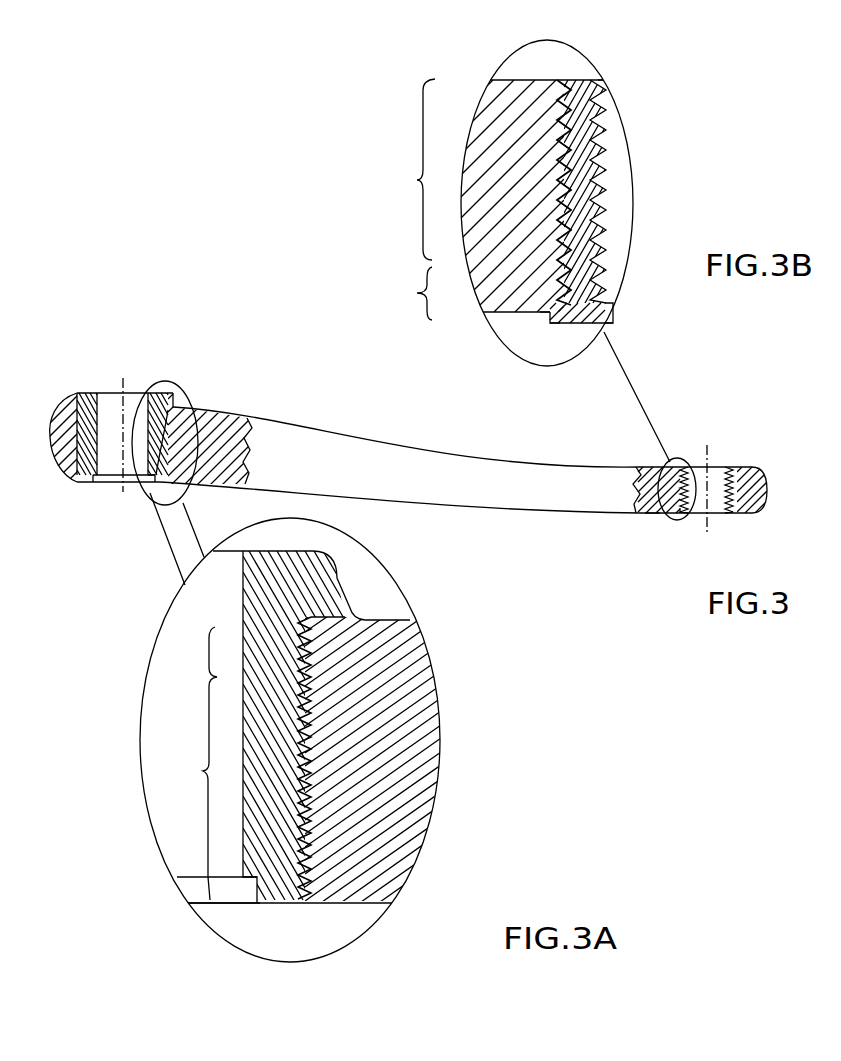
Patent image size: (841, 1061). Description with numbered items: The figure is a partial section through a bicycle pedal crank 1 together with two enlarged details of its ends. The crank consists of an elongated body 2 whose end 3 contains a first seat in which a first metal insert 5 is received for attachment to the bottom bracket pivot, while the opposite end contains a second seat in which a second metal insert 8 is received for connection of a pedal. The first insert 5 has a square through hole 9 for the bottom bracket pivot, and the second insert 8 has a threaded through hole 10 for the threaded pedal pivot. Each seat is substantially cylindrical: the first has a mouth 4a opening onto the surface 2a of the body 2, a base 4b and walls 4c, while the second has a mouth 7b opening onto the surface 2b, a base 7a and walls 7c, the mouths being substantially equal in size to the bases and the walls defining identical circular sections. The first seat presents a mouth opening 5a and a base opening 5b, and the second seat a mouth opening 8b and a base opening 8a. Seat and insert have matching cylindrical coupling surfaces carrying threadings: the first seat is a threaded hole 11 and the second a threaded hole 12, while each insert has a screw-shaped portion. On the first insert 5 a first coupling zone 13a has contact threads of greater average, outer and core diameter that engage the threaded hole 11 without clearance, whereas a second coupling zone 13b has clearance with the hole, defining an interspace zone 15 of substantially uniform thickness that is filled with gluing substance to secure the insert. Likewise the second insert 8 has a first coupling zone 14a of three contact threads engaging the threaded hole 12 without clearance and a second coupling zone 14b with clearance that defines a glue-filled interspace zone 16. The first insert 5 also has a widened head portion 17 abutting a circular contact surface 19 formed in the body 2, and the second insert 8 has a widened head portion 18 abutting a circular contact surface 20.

In FIG. 3, the pedal crank 1 is at (282, 397).
In FIG. 3, the elongated body 2 is at (457, 472).
In FIG. 3, the surface of the body 2a is at (367, 438).
In FIG. 3, the surface of the body 2b is at (470, 508).
In FIG. 3, the end 3 is at (175, 342).
In FIG. 3, the mouth 4a is at (177, 407).
In FIG. 3, the base 4b is at (160, 500).
In FIG. 3, the walls 4c is at (208, 410).
In FIG. 3, the first metal insert 5 is at (108, 378).
In FIG. 3, the mouth opening 5a is at (80, 380).
In FIG. 3A, the mouth opening 5a is at (203, 580).
In FIG. 3, the base opening 5b is at (88, 500).
In FIG. 3A, the base opening 5b is at (195, 928).
In FIG. 3, the base 7a is at (683, 460).
In FIG. 3, the mouth 7b is at (682, 520).
In FIG. 3, the walls 7c is at (655, 513).
In FIG. 3, the second metal insert 8 is at (718, 528).
In FIG. 3, the base opening 8a is at (745, 458).
In FIG. 3B, the base opening 8a is at (625, 80).
In FIG. 3, the mouth opening 8b is at (747, 523).
In FIG. 3B, the mouth opening 8b is at (615, 348).
In FIG. 3, the through hole 9 is at (132, 410).
In FIG. 3A, the through hole 9 is at (162, 713).
In FIG. 3, the through hole 10 is at (713, 480).
In FIG. 3B, the through hole 10 is at (617, 198).
In FIG. 3A, the threaded hole 11 is at (307, 677).
In FIG. 3B, the threaded hole 12 is at (557, 125).
In FIG. 3A, the first coupling zone 13a is at (207, 653).
In FIG. 3A, the second coupling zone 13b is at (205, 770).
In FIG. 3B, the first coupling zone 14a is at (417, 293).
In FIG. 3B, the second coupling zone 14b is at (417, 180).
In FIG. 3A, the interspace zone 15 is at (276, 890).
In FIG. 3B, the interspace zone 16 is at (595, 80).
In FIG. 3A, the widened head portion 17 is at (317, 577).
In FIG. 3B, the widened head portion 18 is at (551, 323).
In FIG. 3A, the circular contact surface 19 is at (330, 618).
In FIG. 3B, the circular contact surface 20 is at (540, 323).